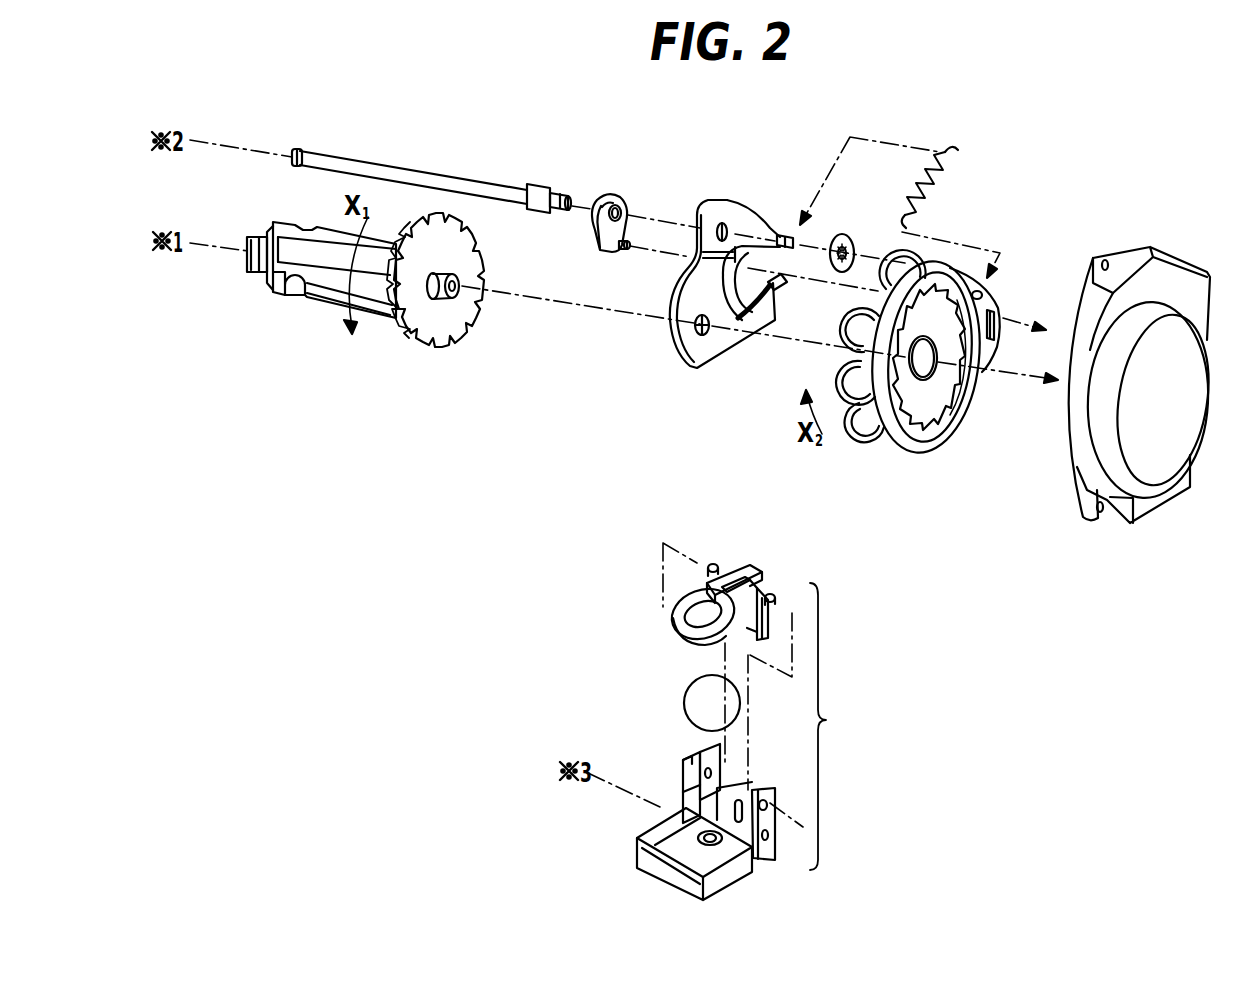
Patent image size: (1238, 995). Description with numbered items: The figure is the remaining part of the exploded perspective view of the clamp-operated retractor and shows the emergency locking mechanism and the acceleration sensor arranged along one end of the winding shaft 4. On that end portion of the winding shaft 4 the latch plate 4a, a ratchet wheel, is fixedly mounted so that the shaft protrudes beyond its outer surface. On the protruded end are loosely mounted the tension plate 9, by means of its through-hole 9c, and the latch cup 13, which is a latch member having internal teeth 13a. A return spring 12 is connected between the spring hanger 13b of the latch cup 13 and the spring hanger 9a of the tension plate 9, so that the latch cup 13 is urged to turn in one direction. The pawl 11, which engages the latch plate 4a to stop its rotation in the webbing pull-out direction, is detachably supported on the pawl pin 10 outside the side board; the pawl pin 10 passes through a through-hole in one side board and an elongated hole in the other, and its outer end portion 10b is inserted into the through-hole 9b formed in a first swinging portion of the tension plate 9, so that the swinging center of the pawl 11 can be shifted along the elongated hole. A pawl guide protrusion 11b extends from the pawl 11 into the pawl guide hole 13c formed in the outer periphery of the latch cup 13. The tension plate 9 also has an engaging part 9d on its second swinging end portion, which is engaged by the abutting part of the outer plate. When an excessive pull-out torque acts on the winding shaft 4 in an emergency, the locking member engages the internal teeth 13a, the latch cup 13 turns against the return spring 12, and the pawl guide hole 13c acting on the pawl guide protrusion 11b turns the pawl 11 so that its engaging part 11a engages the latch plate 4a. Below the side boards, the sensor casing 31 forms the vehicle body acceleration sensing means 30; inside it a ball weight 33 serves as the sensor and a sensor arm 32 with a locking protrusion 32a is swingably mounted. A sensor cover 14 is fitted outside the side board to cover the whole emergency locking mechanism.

The winding shaft 4 is at (287, 266).
The latch plate 4a is at (445, 350).
The tension plate 9 is at (700, 366).
The spring hanger 9a is at (789, 234).
The through-hole 9b is at (727, 223).
The through-hole 9c is at (706, 334).
The engaging part 9d is at (786, 286).
The pawl pin 10 is at (493, 182).
The outer end portion 10b is at (566, 212).
The pawl 11 is at (605, 196).
The engaging part 11a is at (603, 258).
The pawl guide protrusion 11b is at (625, 255).
The return spring 12 is at (940, 186).
The latch cup 13 is at (912, 460).
The internal teeth 13a is at (940, 410).
The spring hanger 13b is at (977, 290).
The pawl guide hole 13c is at (1000, 312).
The sensor cover 14 is at (1190, 410).
The vehicle body acceleration sensing means 30 is at (835, 726).
The sensor casing 31 is at (765, 862).
The sensor arm 32 is at (770, 582).
The locking protrusion 32a is at (673, 634).
The ball weight 33 is at (684, 700).